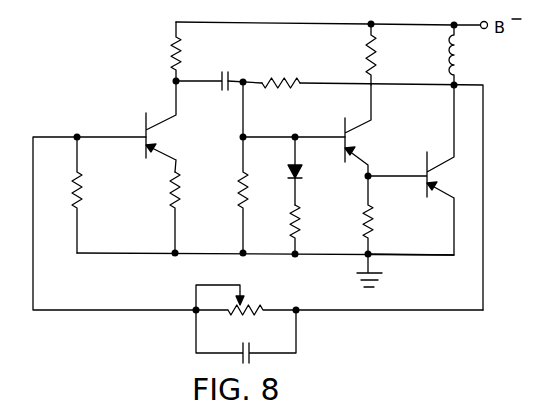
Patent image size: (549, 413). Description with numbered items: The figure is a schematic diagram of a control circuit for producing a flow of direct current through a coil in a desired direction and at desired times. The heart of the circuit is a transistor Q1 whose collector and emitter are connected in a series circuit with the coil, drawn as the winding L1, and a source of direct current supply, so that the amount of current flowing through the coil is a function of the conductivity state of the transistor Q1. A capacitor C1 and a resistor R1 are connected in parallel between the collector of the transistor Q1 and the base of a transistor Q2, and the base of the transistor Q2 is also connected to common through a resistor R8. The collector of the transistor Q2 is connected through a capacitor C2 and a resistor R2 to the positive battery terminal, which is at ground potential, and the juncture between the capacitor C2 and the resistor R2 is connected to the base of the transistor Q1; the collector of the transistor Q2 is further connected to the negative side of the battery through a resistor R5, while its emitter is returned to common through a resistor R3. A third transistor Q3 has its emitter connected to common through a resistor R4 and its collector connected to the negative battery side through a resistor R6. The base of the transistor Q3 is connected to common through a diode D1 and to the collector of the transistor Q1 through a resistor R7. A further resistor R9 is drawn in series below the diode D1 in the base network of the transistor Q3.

The resistor R5 is at (170, 52).
The capacitor C2 is at (233, 68).
The resistor R7 is at (272, 80).
The resistor R6 is at (366, 58).
The inductor L1 is at (451, 55).
The transistor Q2 is at (166, 133).
The transistor Q3 is at (358, 141).
The transistor Q1 is at (420, 190).
The resistor R8 is at (85, 204).
The resistor R3 is at (182, 190).
The resistor R2 is at (250, 186).
The diode D1 is at (300, 173).
The resistor R9 is at (287, 228).
The resistor R4 is at (362, 222).
The resistor R1 is at (248, 297).
The capacitor C1 is at (245, 346).